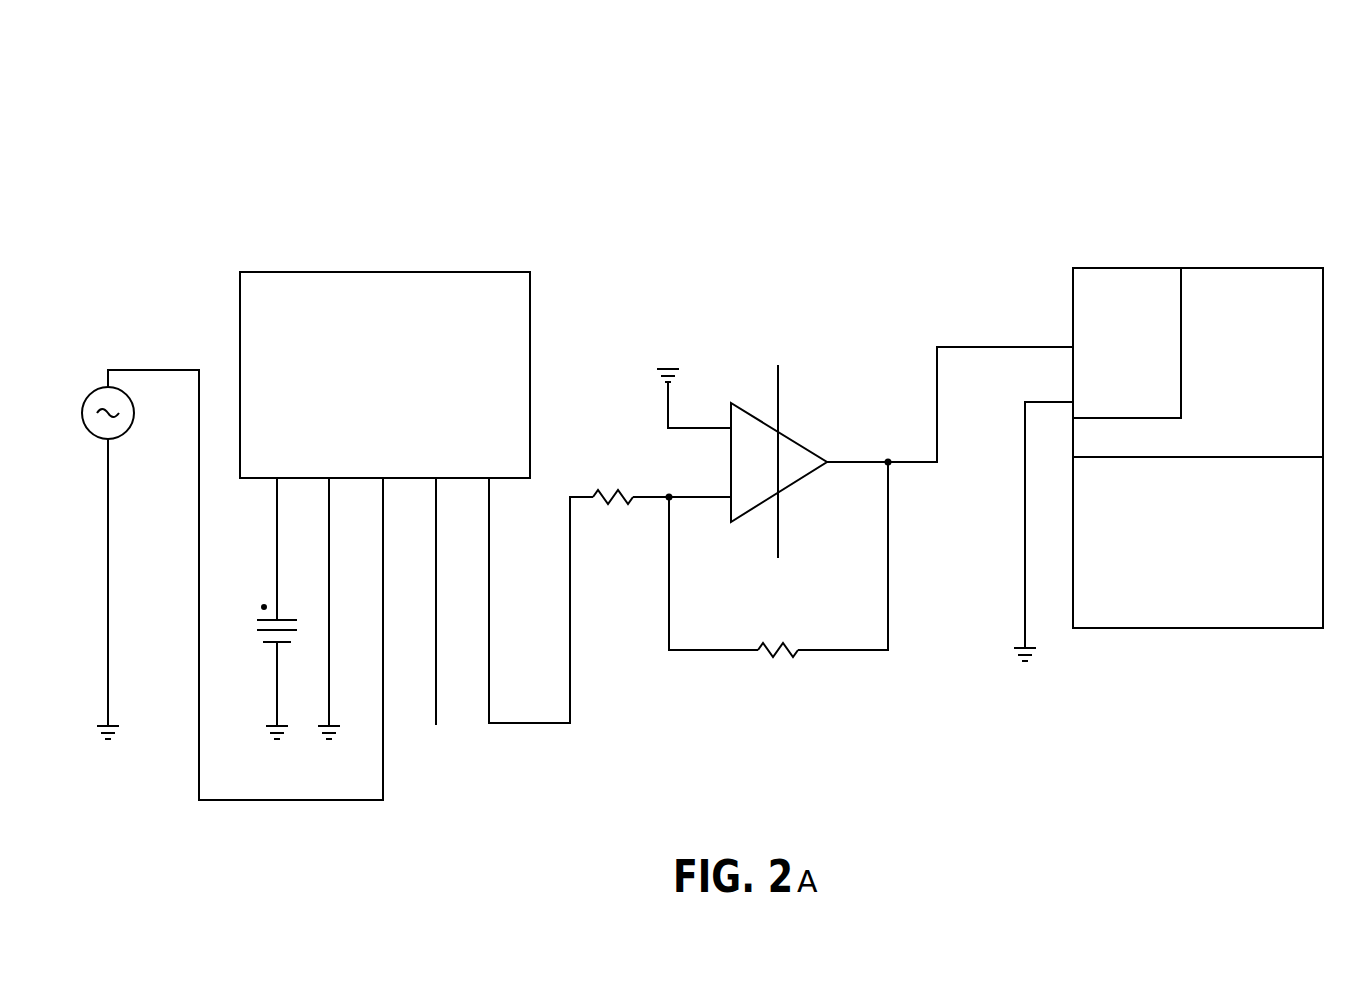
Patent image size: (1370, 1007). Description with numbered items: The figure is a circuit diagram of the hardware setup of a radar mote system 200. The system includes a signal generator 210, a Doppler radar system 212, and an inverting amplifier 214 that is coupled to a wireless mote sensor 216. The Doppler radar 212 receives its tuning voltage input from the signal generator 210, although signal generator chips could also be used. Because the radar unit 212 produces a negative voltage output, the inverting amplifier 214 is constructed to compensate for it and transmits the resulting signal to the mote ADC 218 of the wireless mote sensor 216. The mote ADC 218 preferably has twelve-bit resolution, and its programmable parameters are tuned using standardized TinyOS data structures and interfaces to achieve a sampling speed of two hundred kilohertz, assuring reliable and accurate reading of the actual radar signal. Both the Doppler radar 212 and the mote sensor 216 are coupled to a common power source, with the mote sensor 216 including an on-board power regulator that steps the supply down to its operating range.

The radar mote system 200 is at (652, 36).
The signal generator 210 is at (123, 285).
The Doppler radar system 212 is at (430, 265).
The inverting amplifier 214 is at (812, 408).
The wireless mote sensor 216 is at (1272, 262).
The mote ADC 218 is at (1146, 268).